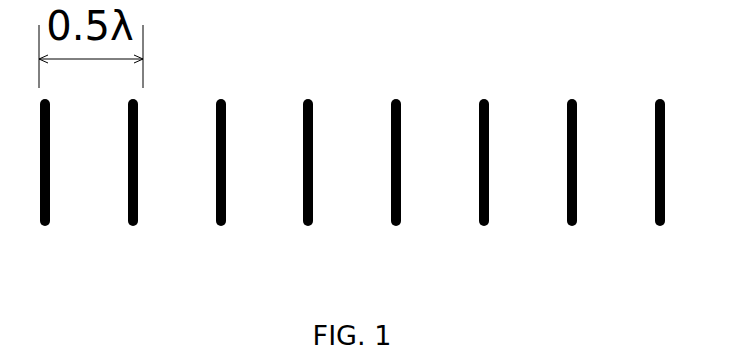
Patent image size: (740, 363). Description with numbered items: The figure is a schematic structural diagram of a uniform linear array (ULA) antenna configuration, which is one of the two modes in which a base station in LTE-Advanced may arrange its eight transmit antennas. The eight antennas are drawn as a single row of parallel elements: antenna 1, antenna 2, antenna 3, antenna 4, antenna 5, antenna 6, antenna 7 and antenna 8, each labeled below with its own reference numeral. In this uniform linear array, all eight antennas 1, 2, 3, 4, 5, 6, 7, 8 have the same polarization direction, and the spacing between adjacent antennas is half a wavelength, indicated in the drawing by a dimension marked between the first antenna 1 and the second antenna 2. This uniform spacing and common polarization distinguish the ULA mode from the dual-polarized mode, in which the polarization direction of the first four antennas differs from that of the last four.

The antenna 1 is at (44, 183).
The antenna 2 is at (132, 183).
The antenna 3 is at (220, 183).
The antenna 4 is at (307, 183).
The antenna 5 is at (395, 183).
The antenna 6 is at (483, 183).
The antenna 7 is at (571, 183).
The antenna 8 is at (659, 183).